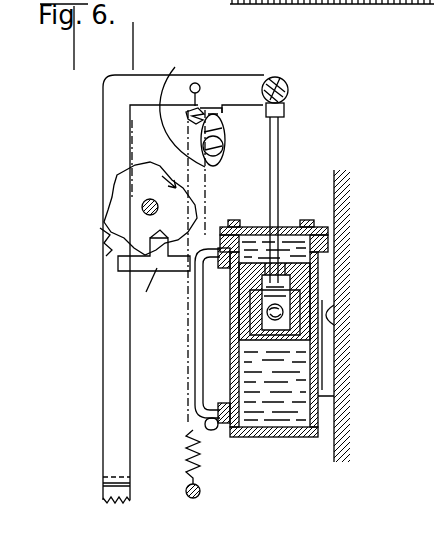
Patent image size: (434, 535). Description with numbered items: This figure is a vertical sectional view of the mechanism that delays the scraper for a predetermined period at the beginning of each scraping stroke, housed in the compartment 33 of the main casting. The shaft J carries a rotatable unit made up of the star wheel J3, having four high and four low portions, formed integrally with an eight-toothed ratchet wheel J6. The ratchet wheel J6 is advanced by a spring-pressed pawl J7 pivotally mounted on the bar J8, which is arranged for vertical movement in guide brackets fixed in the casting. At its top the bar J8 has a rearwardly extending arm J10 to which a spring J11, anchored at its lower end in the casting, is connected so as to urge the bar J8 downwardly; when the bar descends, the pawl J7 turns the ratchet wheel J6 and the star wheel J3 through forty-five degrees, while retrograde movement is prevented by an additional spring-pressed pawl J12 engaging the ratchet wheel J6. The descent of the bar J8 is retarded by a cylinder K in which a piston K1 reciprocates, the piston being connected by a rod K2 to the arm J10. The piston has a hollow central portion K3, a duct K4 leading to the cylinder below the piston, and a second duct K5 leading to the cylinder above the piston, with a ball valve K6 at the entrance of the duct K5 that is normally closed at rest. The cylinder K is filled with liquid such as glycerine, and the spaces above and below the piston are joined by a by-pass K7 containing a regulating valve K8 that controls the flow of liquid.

The compartment 33 is at (343, 3).
The shaft J is at (142, 206).
The star wheel J3 is at (167, 264).
The ratchet wheel J6 is at (104, 240).
The spring-pressed pawl J7 is at (190, 105).
The bar J8 is at (110, 289).
The rearwardly extending arm J10 is at (246, 80).
The spring J11 is at (183, 458).
The additional spring-pressed pawl J12 is at (157, 268).
The cylinder K is at (320, 268).
The piston K1 is at (300, 343).
The rod K2 is at (282, 146).
The hollow central portion K3 is at (283, 287).
The duct K4 is at (224, 321).
The second duct K5 is at (300, 281).
The ball valve K6 is at (284, 312).
The by-pass K7 is at (197, 357).
The regulating valve K8 is at (220, 428).